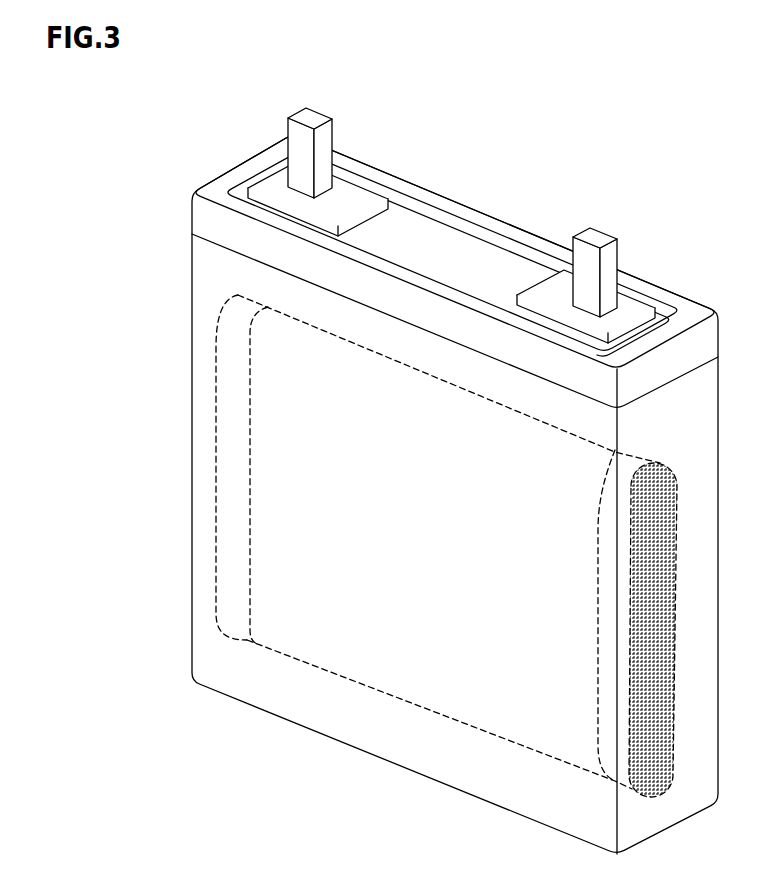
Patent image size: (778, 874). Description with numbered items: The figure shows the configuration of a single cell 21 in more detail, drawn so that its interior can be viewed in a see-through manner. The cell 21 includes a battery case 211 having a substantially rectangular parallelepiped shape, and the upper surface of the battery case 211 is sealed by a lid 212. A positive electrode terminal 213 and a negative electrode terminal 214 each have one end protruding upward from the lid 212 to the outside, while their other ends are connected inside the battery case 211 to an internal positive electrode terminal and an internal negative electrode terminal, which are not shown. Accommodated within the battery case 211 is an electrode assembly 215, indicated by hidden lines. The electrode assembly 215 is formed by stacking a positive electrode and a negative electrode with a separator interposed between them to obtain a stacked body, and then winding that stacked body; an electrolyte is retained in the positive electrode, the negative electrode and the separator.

The cell 21 is at (457, 460).
The battery case 211 is at (511, 221).
The lid 212 is at (698, 306).
The positive electrode terminal 213 is at (310, 117).
The negative electrode terminal 214 is at (596, 236).
The electrode assembly 215 is at (338, 674).